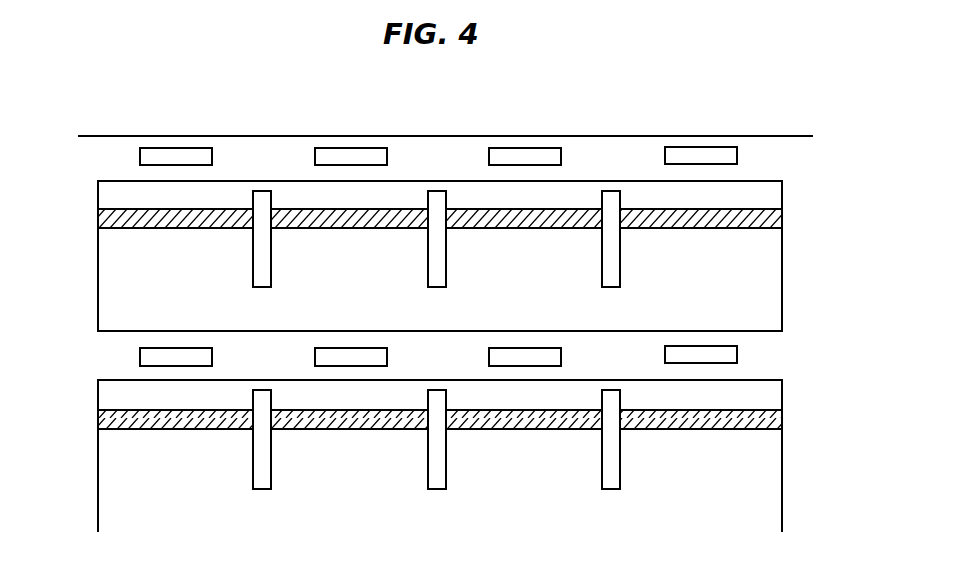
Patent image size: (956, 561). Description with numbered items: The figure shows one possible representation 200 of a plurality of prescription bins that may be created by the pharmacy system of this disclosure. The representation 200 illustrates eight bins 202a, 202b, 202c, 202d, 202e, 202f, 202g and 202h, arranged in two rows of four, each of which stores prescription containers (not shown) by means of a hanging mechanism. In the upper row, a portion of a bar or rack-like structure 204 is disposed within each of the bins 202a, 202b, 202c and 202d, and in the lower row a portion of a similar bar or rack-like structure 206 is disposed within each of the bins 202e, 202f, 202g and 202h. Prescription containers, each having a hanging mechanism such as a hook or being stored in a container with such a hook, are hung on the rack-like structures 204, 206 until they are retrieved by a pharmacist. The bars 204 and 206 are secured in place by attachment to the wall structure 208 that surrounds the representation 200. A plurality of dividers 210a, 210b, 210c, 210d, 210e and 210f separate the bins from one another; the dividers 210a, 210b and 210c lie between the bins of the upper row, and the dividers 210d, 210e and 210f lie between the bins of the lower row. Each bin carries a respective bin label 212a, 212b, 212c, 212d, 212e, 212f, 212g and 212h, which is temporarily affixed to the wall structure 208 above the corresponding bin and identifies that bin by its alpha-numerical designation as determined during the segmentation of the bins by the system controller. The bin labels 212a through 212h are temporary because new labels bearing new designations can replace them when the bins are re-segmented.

The representation 200 is at (155, 114).
The rack-like structure 204 is at (103, 219).
The rack-like structure 206 is at (104, 421).
The wall structure 208 is at (457, 169).
The bin 202a is at (203, 279).
The bin 202b is at (386, 279).
The bin 202c is at (561, 279).
The bin 202d is at (736, 279).
The bin 202e is at (203, 476).
The bin 202f is at (382, 476).
The bin 202g is at (562, 476).
The bin 202h is at (736, 476).
The divider 210a is at (261, 281).
The divider 210b is at (436, 281).
The divider 210c is at (610, 281).
The divider 210d is at (261, 483).
The divider 210e is at (436, 483).
The divider 210f is at (610, 483).
The bin label 212a is at (140, 157).
The bin label 212b is at (315, 157).
The bin label 212c is at (561, 157).
The bin label 212d is at (737, 155).
The bin label 212e is at (140, 357).
The bin label 212f is at (315, 357).
The bin label 212g is at (561, 357).
The bin label 212h is at (737, 355).